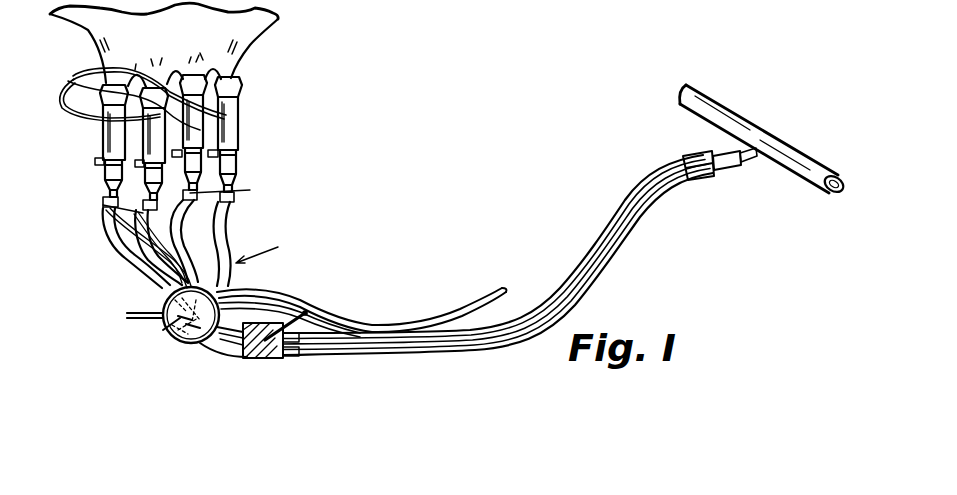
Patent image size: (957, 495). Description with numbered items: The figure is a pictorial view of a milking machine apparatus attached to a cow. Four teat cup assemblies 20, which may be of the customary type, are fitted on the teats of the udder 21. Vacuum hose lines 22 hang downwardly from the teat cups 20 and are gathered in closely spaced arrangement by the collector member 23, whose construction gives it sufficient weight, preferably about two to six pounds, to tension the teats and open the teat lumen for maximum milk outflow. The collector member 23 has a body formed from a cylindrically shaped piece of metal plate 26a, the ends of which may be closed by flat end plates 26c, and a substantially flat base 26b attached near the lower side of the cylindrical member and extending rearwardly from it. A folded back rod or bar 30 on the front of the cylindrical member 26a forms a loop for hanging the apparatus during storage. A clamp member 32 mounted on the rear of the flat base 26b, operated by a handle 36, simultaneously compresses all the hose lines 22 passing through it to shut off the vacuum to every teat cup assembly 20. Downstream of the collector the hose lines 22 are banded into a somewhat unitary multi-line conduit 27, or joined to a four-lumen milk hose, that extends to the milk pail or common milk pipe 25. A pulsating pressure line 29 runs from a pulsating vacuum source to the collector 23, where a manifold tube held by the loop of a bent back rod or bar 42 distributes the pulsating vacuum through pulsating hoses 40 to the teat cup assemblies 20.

The teat cup assemblies 20 is at (75, 77).
The udder 21 is at (217, 30).
The vacuum hose lines 22 is at (122, 203).
The collector member 23 is at (196, 352).
The milk pail or common milk pipe 25 is at (790, 170).
The cylindrically shaped metal plate 26a is at (193, 343).
The flat base 26b is at (248, 358).
The end plates 26c is at (137, 346).
The multi-line conduit 27 is at (604, 279).
The pulsating pressure line 29 is at (478, 304).
The folded back rod or bar 30 is at (150, 306).
The clamp member 32 is at (308, 313).
The handle 36 is at (292, 304).
The pulsating hoses 40 is at (120, 157).
The bent back rod or bar 42 is at (270, 248).